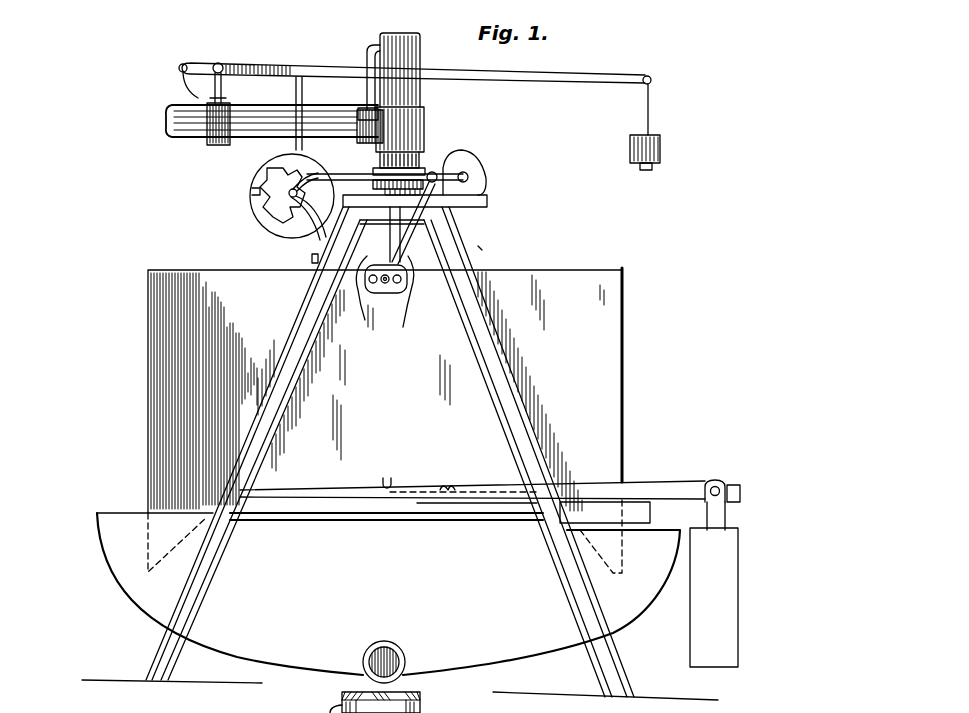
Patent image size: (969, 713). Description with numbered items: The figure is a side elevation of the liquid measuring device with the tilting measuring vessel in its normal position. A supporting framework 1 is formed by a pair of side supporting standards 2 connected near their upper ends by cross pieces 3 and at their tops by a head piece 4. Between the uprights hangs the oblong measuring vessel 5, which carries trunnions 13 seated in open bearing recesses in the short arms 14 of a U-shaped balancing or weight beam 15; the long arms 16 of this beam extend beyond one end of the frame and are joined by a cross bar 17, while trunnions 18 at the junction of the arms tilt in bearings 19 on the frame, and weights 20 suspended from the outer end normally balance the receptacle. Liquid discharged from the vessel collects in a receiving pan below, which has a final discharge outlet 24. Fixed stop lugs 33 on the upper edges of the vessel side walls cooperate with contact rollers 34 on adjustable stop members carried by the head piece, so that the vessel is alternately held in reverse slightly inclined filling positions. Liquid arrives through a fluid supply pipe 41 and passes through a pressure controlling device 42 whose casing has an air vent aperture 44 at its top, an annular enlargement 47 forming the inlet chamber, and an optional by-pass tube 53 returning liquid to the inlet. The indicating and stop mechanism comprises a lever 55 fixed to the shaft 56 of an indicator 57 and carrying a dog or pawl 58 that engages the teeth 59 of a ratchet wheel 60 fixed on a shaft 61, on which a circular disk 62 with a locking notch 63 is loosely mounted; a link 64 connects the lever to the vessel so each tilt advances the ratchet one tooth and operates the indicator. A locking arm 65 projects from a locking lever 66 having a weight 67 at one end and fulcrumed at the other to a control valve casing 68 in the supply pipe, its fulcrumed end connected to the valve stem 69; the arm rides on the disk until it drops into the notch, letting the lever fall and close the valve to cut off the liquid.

The supporting framework 1 is at (483, 316).
The side supporting standards 2 is at (303, 348).
The cross pieces 3 is at (489, 251).
The head piece 4 is at (450, 204).
The measuring vessel 5 is at (610, 340).
The trunnions 13 is at (389, 478).
The short arms 14 is at (408, 487).
The balancing or weight beam 15 is at (590, 483).
The long arms 16 is at (673, 485).
The cross bar 17 is at (738, 485).
The trunnions 18 is at (448, 482).
The bearings 19 is at (452, 500).
The weights 20 is at (700, 630).
The final discharge outlet 24 is at (382, 642).
The fixed stop lugs 33 is at (371, 295).
The contact rollers 34 is at (418, 300).
The fluid supply pipe 41 is at (260, 110).
The pressure controlling device 42 is at (421, 88).
The air vent aperture 44 is at (415, 690).
The annular enlargement 47 is at (424, 121).
The by-pass tube 53 is at (366, 101).
The lever 55 is at (404, 176).
The shaft 56 is at (468, 178).
The indicator 57 is at (484, 165).
The dog or pawl 58 is at (326, 184).
The teeth 59 is at (285, 218).
The ratchet wheel 60 is at (297, 251).
The shaft 61 is at (283, 200).
The circular disk 62 is at (257, 168).
The locking notch 63 is at (257, 192).
The link 64 is at (406, 258).
The locking arm 65 is at (300, 98).
The locking lever 66 is at (598, 73).
The weight 67 is at (661, 150).
The control valve casing 68 is at (222, 130).
The stem 69 is at (226, 75).